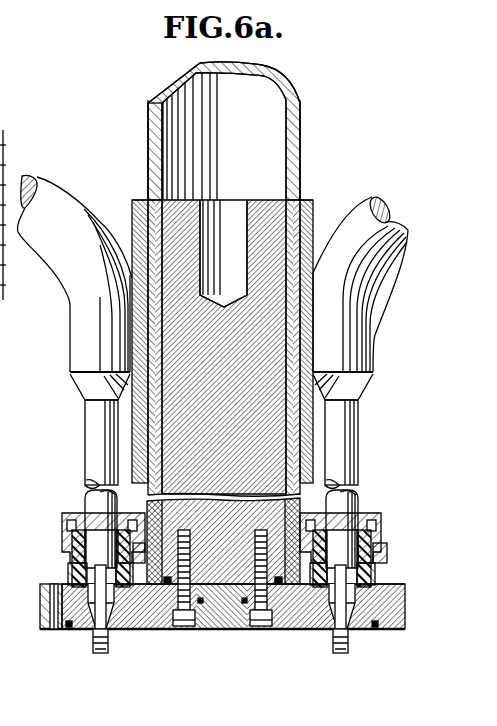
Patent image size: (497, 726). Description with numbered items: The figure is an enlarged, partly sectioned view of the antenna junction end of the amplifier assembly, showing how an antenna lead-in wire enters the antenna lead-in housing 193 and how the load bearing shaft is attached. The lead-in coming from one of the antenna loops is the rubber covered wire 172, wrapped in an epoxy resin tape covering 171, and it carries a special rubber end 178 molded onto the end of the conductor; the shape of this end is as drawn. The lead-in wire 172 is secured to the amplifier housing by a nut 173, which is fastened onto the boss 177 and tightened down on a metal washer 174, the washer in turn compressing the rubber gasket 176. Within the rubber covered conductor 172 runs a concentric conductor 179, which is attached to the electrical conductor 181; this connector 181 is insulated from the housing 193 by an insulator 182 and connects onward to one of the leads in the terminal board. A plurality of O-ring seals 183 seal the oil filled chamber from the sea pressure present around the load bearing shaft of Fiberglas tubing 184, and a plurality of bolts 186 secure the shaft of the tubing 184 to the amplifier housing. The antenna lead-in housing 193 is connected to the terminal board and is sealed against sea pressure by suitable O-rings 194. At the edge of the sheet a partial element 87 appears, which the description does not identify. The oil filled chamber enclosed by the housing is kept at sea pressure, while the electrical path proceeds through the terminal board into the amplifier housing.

The adjacent element (partial) 87 is at (8, 203).
The Fiberglas tubing 184 is at (148, 170).
The epoxy resin tape covering 171 is at (76, 284).
The rubber covered wire 172 is at (95, 443).
The nut 173 is at (85, 510).
The metal washer 174 is at (66, 522).
The rubber gasket 176 is at (68, 534).
The boss 177 is at (392, 565).
The rubber end 178 is at (68, 576).
The concentric conductor 179 is at (72, 560).
The electrical conductor 181 is at (97, 645).
The insulator 182 is at (118, 625).
The O-ring seals 183 is at (166, 588).
The bolts 186 is at (184, 626).
The antenna lead-in housing 193 is at (42, 608).
The O-rings 194 is at (70, 628).